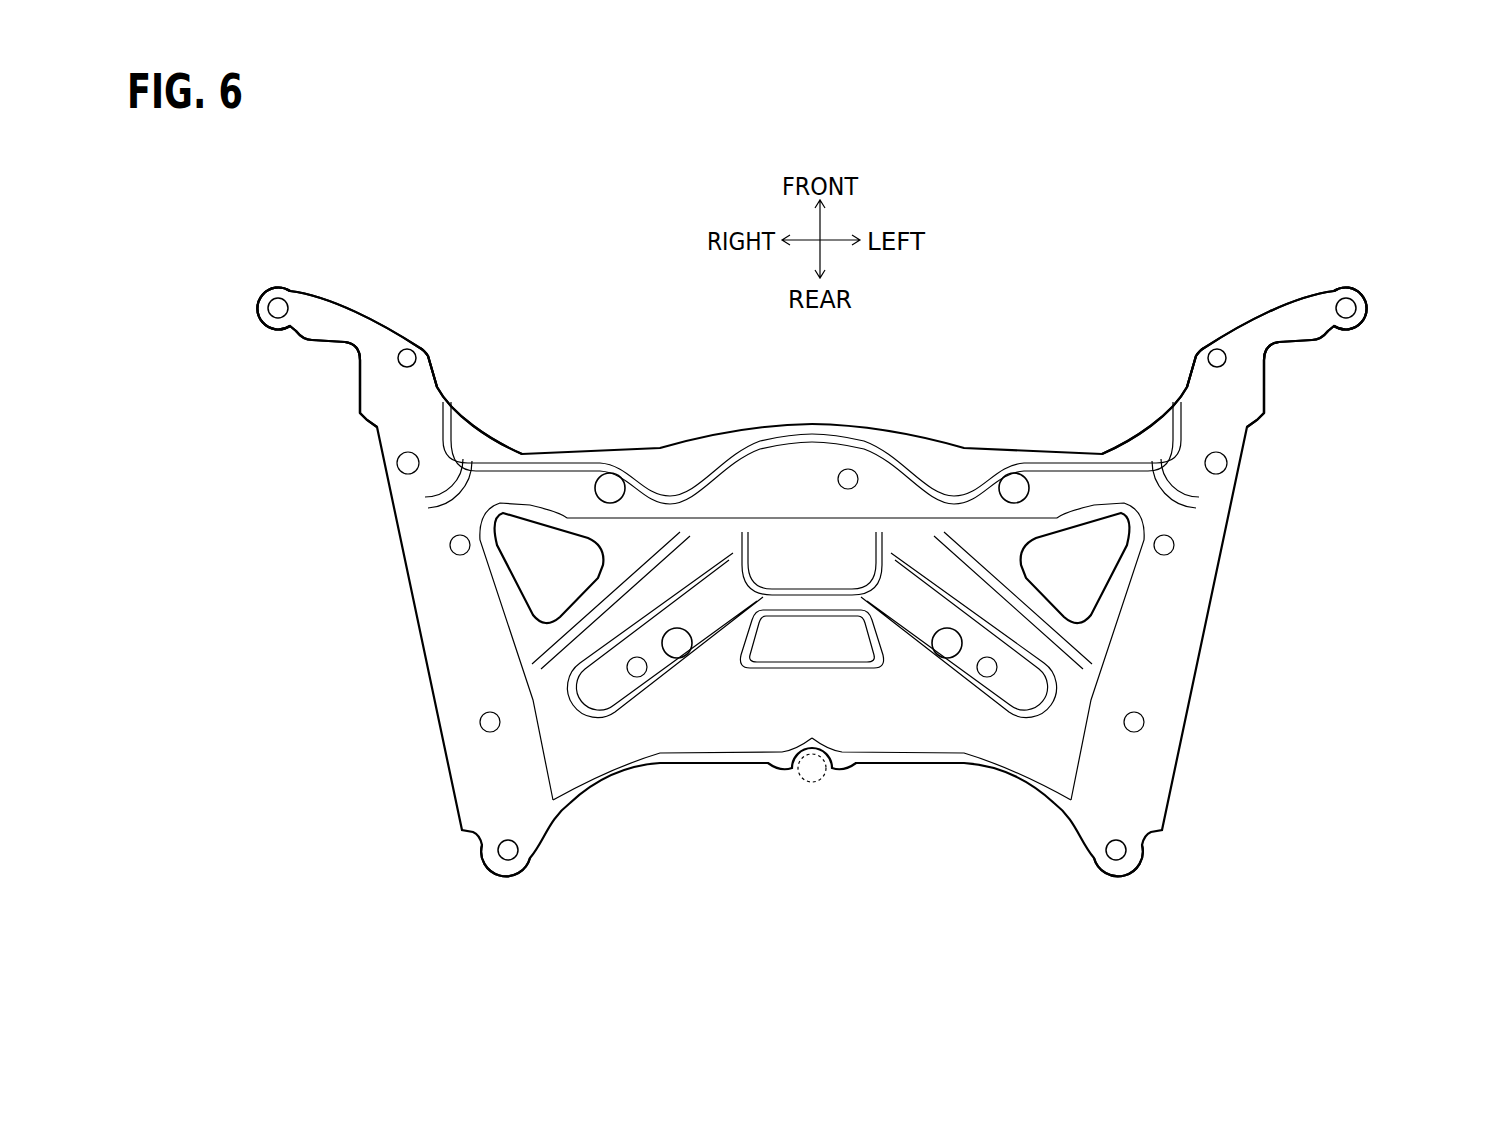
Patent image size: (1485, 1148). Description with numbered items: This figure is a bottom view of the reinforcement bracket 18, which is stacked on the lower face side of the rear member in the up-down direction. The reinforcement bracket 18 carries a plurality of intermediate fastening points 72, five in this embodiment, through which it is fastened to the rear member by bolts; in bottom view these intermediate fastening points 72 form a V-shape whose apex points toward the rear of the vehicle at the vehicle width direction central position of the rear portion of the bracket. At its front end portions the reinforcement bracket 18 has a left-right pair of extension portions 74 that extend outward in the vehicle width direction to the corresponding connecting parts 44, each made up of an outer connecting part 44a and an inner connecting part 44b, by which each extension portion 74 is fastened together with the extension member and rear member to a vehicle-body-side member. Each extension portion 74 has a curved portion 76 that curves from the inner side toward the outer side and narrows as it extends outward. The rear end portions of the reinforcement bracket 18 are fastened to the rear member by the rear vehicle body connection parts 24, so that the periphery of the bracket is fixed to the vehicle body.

The reinforcement bracket 18 is at (1246, 642).
The rear vehicle body connection part 24 is at (508, 852).
The connecting part 44 is at (328, 275).
The outer connecting part 44a is at (266, 298).
The inner connecting part 44b is at (432, 350).
The intermediate fastening point 72 is at (610, 488).
The extension portion 74 is at (337, 369).
The curved portion 76 is at (408, 356).